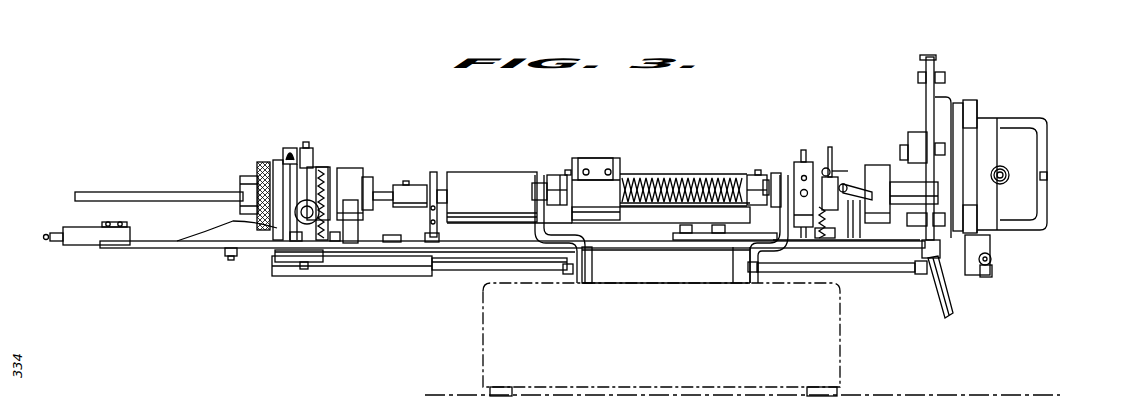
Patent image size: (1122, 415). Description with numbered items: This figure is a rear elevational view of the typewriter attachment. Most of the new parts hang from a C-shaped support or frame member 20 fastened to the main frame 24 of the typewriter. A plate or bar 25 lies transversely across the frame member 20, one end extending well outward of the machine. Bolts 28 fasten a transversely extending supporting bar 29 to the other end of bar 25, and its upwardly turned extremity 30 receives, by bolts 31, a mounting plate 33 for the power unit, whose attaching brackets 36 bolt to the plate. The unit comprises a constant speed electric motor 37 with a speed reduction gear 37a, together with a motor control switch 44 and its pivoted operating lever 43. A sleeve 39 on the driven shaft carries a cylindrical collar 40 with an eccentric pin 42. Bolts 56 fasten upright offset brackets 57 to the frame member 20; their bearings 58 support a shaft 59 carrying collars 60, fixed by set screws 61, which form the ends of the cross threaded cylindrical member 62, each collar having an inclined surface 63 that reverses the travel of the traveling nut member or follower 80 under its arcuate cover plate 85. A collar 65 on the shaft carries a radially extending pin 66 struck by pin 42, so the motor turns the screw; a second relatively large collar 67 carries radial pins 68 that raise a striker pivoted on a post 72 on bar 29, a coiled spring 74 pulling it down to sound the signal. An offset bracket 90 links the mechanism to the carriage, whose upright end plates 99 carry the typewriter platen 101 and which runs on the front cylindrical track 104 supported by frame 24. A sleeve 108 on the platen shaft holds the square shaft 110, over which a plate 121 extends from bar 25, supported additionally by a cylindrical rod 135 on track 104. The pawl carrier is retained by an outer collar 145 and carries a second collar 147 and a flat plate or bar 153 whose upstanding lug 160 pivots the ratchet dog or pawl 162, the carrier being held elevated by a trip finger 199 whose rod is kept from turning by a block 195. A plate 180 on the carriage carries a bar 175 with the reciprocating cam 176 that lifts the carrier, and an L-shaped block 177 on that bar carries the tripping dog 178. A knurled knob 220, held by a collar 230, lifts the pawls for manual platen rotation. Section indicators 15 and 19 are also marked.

The square shaft 110 is at (126, 192).
The tripping dog 178 is at (44, 237).
The L-shaped block 177 is at (86, 246).
The bar 175 is at (158, 249).
The reciprocating cam 176 is at (216, 233).
The block 195 is at (230, 259).
The collar 230 is at (247, 188).
The knurled knob 220 is at (262, 174).
The ratchet dog or pawl 162 is at (291, 150).
The upstanding lug 160 is at (307, 149).
The flat plate or bar 153 is at (319, 178).
The second collar 147 is at (348, 176).
The outer collar 145 is at (369, 180).
The trip finger 199 is at (358, 225).
The sleeve 108 is at (418, 185).
The upright end plates 99 is at (438, 179).
The plate 180 is at (437, 220).
The typewriter platen 101 is at (505, 178).
The collars 60 is at (532, 192).
The bearings 58 is at (553, 175).
The shaft 59 is at (562, 175).
The set screws 61 is at (569, 171).
The section indicator 15 is at (577, 143).
The section indicator 19 is at (577, 233).
The arcuate cover plate 85 is at (628, 178).
The traveling nut member or follower 80 is at (641, 181).
The cylindrical member (cross screw) 62 is at (656, 179).
The inclined surface 63 is at (752, 177).
The upright offset brackets 57 is at (543, 245).
The bolts 56 is at (568, 275).
The offset bracket 90 is at (590, 250).
The C-shaped support or frame member 20 is at (613, 268).
The bolts 28 is at (685, 240).
The supporting bar or member 29 is at (703, 241).
The coiled spring 74 is at (820, 238).
The radial pins 68 is at (803, 150).
The second relatively large collar 67 is at (810, 164).
The radially extending pin 66 is at (831, 150).
The pin 42 is at (836, 178).
The post 72 is at (851, 215).
The collar 65 is at (826, 238).
The cylindrical collar 40 is at (871, 167).
The sleeve 39 is at (905, 182).
The upwardly turned extremity 30 is at (915, 145).
The bolts 31 is at (924, 110).
The mounting plate 33 is at (921, 61).
The attaching brackets 36 is at (955, 101).
The constant speed electric motor 37 is at (1046, 122).
The speed reduction gear 37a is at (1040, 162).
The pivoted operating lever 43 is at (943, 298).
The motor control switch 44 is at (988, 275).
The main frame 24 is at (483, 337).
The front cylindrical track 104 is at (466, 270).
The cylindrical rod 135 is at (373, 277).
The plate 121 is at (305, 263).
The plate or bar 25 is at (420, 253).